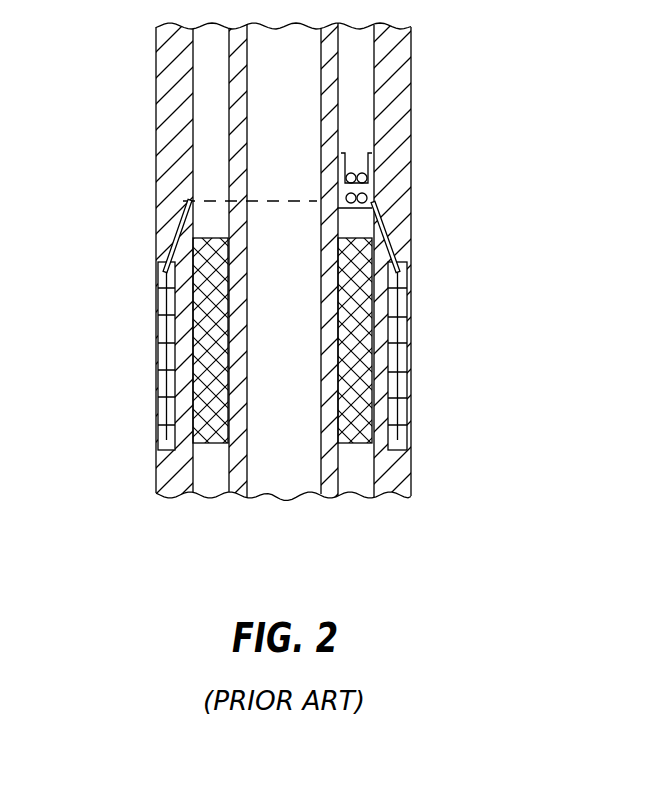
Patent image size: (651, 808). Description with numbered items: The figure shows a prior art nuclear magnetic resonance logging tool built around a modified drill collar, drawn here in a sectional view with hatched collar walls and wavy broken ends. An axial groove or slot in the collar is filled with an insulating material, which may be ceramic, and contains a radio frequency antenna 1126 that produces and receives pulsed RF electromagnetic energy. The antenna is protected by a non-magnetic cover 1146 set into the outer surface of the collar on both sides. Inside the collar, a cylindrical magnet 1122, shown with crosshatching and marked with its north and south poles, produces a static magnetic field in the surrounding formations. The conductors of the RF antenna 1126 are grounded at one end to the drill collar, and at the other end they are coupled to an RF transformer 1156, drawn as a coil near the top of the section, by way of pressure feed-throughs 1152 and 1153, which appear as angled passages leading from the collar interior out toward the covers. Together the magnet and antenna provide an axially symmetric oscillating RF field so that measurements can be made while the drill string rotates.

The cylindrical magnet 1122 is at (197, 405).
The radio frequency antenna 1126 is at (157, 357).
The non-magnetic cover 1146 is at (157, 302).
The pressure feed-through 1152 is at (381, 220).
The pressure feed-through 1153 is at (177, 232).
The RF transformer 1156 is at (338, 188).